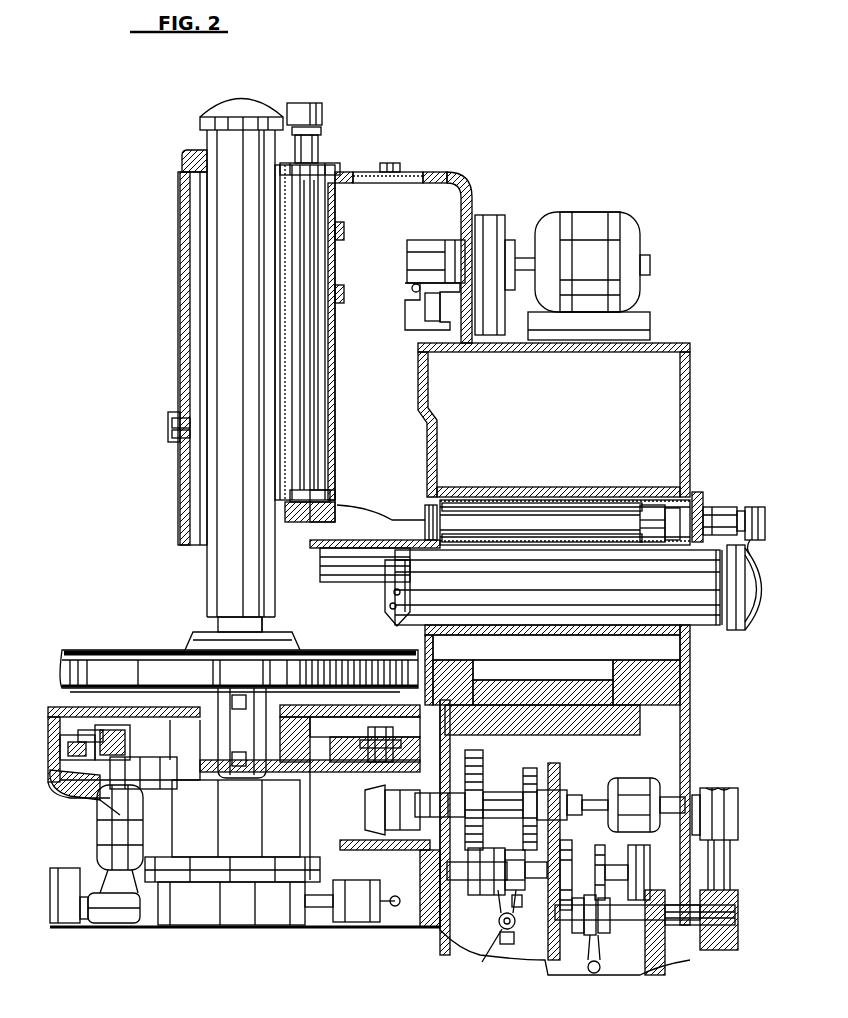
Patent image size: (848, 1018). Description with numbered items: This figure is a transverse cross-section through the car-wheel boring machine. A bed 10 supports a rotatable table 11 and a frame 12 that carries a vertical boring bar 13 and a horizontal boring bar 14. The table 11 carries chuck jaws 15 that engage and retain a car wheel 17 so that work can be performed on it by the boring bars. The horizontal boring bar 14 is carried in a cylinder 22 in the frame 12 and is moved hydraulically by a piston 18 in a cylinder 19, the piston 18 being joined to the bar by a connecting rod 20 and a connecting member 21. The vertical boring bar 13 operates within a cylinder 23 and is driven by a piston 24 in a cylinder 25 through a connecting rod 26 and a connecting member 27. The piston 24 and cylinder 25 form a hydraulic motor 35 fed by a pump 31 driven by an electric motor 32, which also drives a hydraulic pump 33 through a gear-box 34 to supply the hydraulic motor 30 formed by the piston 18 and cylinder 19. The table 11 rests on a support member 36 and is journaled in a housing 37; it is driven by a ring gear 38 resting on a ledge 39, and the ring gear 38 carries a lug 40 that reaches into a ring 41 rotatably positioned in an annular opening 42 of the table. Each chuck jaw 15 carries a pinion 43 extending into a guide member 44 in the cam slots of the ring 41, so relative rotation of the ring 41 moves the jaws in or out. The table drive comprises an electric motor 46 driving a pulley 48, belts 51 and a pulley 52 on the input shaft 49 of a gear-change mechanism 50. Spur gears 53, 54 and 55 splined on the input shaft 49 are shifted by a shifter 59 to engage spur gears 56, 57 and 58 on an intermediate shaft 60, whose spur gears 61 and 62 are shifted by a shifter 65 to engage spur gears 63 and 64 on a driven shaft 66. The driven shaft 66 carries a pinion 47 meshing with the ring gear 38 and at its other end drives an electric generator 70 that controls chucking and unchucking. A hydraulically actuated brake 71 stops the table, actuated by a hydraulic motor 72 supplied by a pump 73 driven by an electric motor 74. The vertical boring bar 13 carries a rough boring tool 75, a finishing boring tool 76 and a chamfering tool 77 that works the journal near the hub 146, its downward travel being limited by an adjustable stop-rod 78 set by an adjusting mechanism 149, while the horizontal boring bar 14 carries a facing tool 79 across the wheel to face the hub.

The bed 10 is at (452, 930).
The rotatable table 11 is at (50, 732).
The frame 12 is at (427, 452).
The vertical boring bar 13 is at (210, 328).
The horizontal boring bar 14 is at (712, 622).
The chuck jaws 15 is at (80, 693).
The car wheel 17 is at (285, 645).
The piston 18 is at (652, 492).
The cylinder 19 is at (500, 490).
The connecting rod 20 is at (725, 508).
The connecting member 21 is at (760, 545).
The cylinder 22 is at (500, 608).
The cylinder 23 is at (290, 258).
The piston 24 is at (325, 470).
The cylinder 25 is at (325, 442).
The connecting rod 26 is at (315, 213).
The connecting member 27 is at (290, 112).
The hydraulic motor 30 is at (584, 473).
The pump 31 is at (440, 240).
The electric motor 32 is at (585, 215).
The hydraulic pump 33 is at (425, 305).
The gear-box 34 is at (492, 240).
The hydraulic motor 35 is at (330, 390).
The support member 36 is at (158, 780).
The housing 37 is at (192, 822).
The ring gear 38 is at (68, 785).
The ledge 39 is at (95, 800).
The lug 40 is at (93, 745).
The ring 41 is at (120, 745).
The annular opening 42 is at (60, 744).
The pinion 43 is at (370, 735).
The guide member 44 is at (412, 748).
The electric motor 46 is at (696, 795).
The pinion 47 is at (375, 830).
The pulley 48 is at (740, 820).
The input shaft 49 is at (695, 926).
The gear-change mechanism 50 is at (574, 763).
The belts 51 is at (732, 872).
The pulley 52 is at (730, 945).
The spur gear 53 is at (577, 935).
The spur gear 54 is at (590, 937).
The spur gear 55 is at (606, 936).
The spur gear 56 is at (575, 860).
The spur gear 57 is at (605, 865).
The spur gear 58 is at (650, 850).
The shifter 59 is at (596, 975).
The intermediate shaft 60 is at (520, 892).
The spur gear 61 is at (518, 908).
The spur gear 62 is at (492, 890).
The spur gear 63 is at (530, 768).
The spur gear 64 is at (478, 770).
The shifter 65 is at (494, 932).
The driven shaft 66 is at (480, 825).
The electric generator 70 is at (620, 778).
The hydraulically actuated brake 71 is at (248, 915).
The hydraulic motor 72 is at (358, 893).
The pump 73 is at (105, 915).
The electric motor 74 is at (100, 835).
The rough boring tool 75 is at (240, 782).
The finishing boring tool 76 is at (238, 709).
The chamfering tool 77 is at (268, 626).
The adjustable stop-rod 78 is at (180, 225).
The facing tool 79 is at (385, 603).
The hub 146 is at (192, 635).
The adjusting mechanism 149 is at (168, 428).